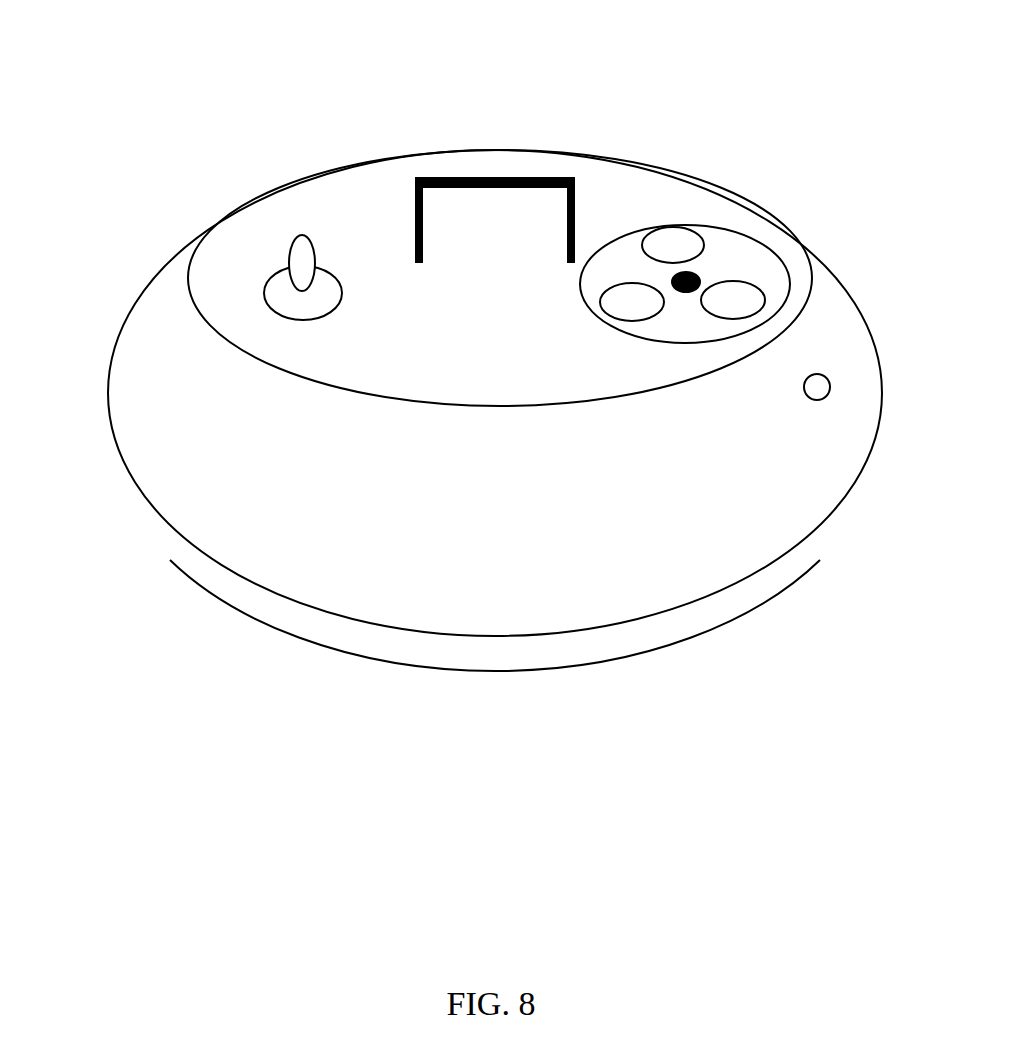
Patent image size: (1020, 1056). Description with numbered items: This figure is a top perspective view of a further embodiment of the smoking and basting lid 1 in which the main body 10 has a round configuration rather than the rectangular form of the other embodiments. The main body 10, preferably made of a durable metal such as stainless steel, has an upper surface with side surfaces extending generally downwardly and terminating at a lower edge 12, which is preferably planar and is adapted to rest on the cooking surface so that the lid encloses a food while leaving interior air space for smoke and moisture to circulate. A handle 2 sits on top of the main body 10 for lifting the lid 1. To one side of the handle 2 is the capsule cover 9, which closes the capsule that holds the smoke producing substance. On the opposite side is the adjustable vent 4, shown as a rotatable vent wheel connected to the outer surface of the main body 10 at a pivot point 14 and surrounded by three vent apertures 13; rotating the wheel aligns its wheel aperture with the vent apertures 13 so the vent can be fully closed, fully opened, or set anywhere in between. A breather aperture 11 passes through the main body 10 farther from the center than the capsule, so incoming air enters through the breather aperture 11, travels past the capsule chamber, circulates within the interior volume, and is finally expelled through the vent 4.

The smoking and basting lid 1 is at (293, 213).
The handle 2 is at (479, 175).
The adjustable vent 4 is at (738, 250).
The capsule cover 9 is at (262, 290).
The main body 10 is at (152, 532).
The breather aperture 11 is at (828, 405).
The lower edge 12 is at (692, 602).
The vent apertures 13 is at (657, 310).
The pivot point 14 is at (686, 270).